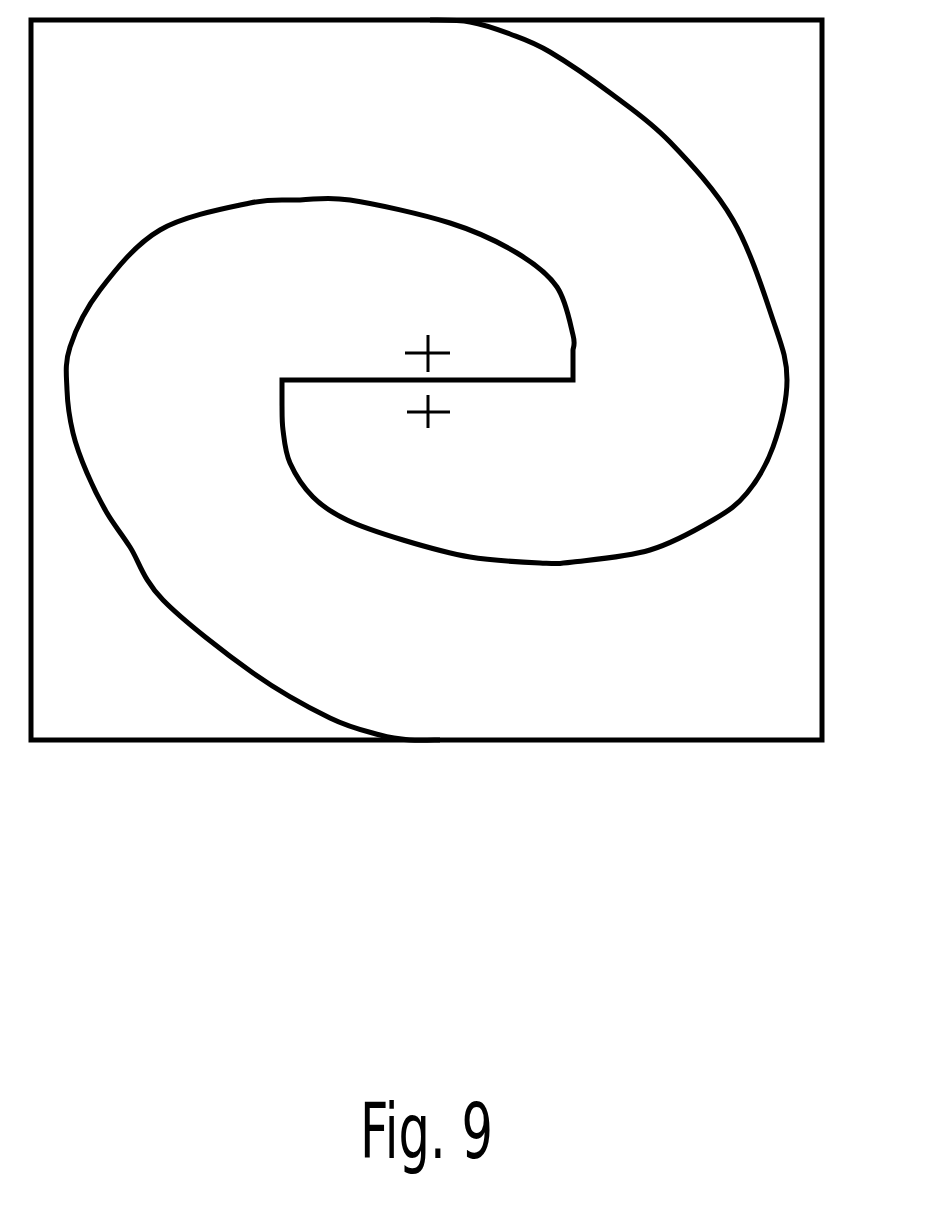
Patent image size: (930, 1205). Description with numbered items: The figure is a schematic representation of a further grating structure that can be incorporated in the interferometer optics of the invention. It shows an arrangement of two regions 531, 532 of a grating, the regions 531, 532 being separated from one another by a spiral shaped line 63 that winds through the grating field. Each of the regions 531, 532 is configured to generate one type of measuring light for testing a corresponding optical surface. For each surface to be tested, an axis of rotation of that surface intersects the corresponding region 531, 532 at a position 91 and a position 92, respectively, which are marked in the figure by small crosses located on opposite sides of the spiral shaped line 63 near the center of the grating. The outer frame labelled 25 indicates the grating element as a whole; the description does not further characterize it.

The magnetic layer / substrate element 25 is at (410, 787).
The spiral shaped line 63 is at (137, 240).
The region 531 is at (595, 677).
The region 532 is at (324, 137).
The position 91 is at (423, 348).
The position 92 is at (430, 417).